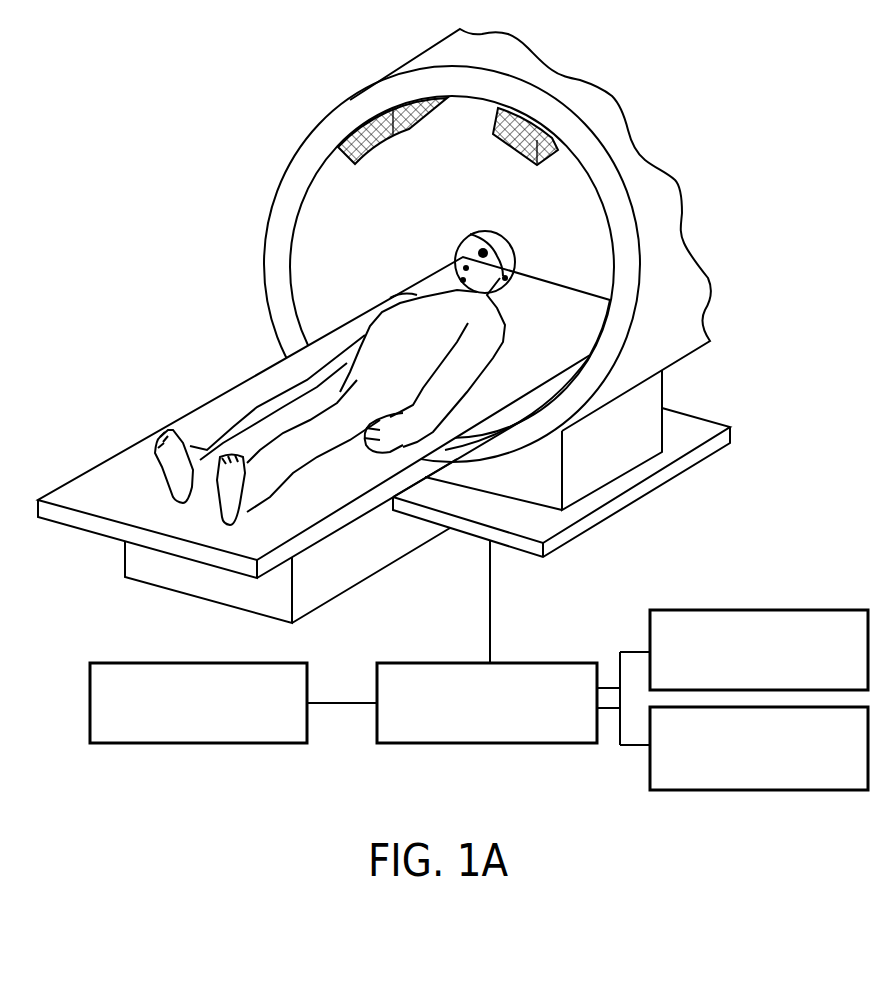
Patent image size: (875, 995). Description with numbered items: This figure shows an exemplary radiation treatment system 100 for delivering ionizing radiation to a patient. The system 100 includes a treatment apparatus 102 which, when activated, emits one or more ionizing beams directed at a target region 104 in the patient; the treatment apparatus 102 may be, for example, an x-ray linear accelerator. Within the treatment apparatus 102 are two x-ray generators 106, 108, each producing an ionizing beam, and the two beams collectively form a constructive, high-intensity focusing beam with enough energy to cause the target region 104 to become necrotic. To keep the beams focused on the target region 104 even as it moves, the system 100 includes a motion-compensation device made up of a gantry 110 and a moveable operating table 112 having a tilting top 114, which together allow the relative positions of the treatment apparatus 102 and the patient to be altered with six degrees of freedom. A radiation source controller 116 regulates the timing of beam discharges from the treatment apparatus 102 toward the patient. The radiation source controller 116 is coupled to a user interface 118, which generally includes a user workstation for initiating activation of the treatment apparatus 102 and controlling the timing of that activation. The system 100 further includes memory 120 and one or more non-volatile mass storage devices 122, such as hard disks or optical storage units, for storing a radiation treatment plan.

The radiation treatment system 100 is at (687, 127).
The treatment apparatus 102 is at (663, 243).
The target region 104 is at (492, 234).
The x-ray generator 106 is at (532, 125).
The x-ray generator 108 is at (360, 127).
The gantry 110 is at (290, 261).
The moveable operating table 112 is at (121, 451).
The tilting top 114 is at (293, 581).
The radiation source controller 116 is at (469, 729).
The user interface 118 is at (180, 728).
The memory 120 is at (742, 678).
The non-volatile mass storage device 122 is at (742, 775).